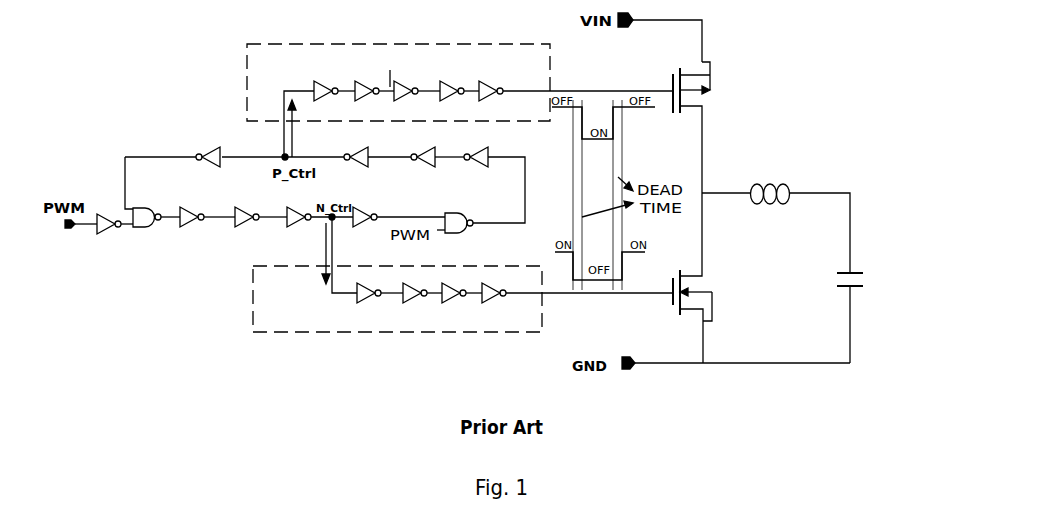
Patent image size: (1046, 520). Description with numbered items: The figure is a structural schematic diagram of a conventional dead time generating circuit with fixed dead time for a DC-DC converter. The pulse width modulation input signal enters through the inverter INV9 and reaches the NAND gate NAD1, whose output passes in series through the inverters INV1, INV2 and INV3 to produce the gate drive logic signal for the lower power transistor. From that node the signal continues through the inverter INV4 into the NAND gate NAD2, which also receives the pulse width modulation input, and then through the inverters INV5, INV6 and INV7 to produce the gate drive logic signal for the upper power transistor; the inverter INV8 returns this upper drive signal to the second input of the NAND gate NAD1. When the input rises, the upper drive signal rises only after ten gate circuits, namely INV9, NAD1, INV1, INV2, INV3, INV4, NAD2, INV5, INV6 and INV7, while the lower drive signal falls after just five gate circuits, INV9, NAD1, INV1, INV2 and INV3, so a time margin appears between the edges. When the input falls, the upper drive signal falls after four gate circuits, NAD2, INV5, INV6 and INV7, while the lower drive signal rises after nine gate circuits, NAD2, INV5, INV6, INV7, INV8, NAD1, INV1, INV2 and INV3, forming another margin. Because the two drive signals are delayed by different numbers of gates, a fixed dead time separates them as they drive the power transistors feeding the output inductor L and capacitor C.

The inverter INV1 is at (203, 230).
The inverter INV2 is at (257, 230).
The inverter INV3 is at (317, 230).
The inverter INV4 is at (395, 230).
The inverter INV5 is at (468, 169).
The inverter INV6 is at (406, 169).
The inverter INV7 is at (301, 169).
The inverter INV8 is at (181, 168).
The inverter INV9 is at (109, 233).
The NAND gate NAD1 is at (151, 205).
The NAND gate NAD2 is at (481, 207).
The inductor L is at (776, 221).
The capacitor C is at (841, 318).